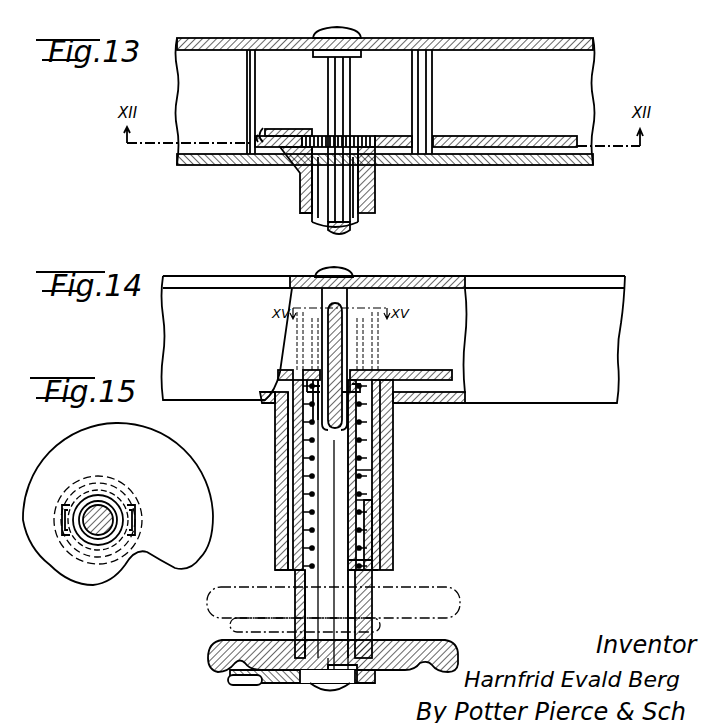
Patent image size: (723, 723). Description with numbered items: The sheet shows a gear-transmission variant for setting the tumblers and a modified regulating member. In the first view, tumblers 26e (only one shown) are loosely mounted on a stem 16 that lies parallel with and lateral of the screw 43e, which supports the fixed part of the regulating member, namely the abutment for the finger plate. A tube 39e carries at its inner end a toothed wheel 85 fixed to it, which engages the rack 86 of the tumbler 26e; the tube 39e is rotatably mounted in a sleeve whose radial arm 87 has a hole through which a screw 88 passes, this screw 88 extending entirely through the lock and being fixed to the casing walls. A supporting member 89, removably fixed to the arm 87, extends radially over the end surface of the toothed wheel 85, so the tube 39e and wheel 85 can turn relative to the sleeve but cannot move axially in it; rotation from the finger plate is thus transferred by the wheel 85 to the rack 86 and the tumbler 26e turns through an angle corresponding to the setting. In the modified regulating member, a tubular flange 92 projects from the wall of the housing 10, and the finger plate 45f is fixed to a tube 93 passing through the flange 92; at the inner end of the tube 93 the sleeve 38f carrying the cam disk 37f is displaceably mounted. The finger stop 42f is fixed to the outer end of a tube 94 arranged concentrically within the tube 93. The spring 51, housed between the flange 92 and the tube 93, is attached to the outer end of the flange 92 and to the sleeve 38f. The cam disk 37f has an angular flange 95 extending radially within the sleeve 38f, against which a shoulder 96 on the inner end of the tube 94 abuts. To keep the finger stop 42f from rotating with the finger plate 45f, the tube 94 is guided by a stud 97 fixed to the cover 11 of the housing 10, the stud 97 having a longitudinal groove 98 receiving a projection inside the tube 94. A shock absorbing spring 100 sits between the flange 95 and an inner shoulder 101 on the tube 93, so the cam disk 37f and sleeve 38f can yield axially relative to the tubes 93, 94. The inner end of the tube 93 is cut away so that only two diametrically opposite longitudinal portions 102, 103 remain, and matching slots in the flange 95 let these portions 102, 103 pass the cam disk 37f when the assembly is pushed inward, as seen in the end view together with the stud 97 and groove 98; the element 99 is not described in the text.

In FIG. 13, the housing 10 is at (537, 165).
In FIG. 14, the housing 10 is at (554, 400).
In FIG. 13, the cover 11 is at (556, 38).
In FIG. 14, the cover 11 is at (444, 277).
In FIG. 13, the stem 16 is at (432, 82).
In FIG. 13, the tumbler 26e is at (486, 136).
In FIG. 14, the cam disk 37f is at (422, 370).
In FIG. 15, the cam disk 37f is at (206, 553).
In FIG. 14, the sleeve 38f is at (393, 436).
In FIG. 13, the tube 39e is at (356, 191).
In FIG. 14, the finger stop 42f is at (376, 681).
In FIG. 13, the screw 43e is at (346, 78).
In FIG. 14, the finger plate 45f is at (440, 640).
In FIG. 14, the spring 51 is at (375, 500).
In FIG. 13, the toothed wheel 85 is at (366, 136).
In FIG. 13, the rack 86 is at (300, 180).
In FIG. 13, the radial arm 87 is at (258, 136).
In FIG. 13, the screw 88 is at (247, 70).
In FIG. 13, the supporting member 89 is at (292, 129).
In FIG. 14, the tubular flange 92 is at (393, 468).
In FIG. 14, the tube 93 is at (372, 582).
In FIG. 15, the tube 93 is at (92, 548).
In FIG. 14, the tube 94 is at (360, 604).
In FIG. 14, the angular flange 95 is at (366, 370).
In FIG. 15, the angular flange 95 is at (82, 508).
In FIG. 14, the shoulder 96 is at (314, 374).
In FIG. 15, the shoulder 96 is at (112, 540).
In FIG. 14, the stud 97 is at (350, 300).
In FIG. 15, the stud 97 is at (100, 536).
In FIG. 14, the longitudinal groove 98 is at (329, 312).
In FIG. 14, the outer casing 99 is at (276, 403).
In FIG. 14, the shock absorbing spring 100 is at (366, 514).
In FIG. 14, the inner shoulder 101 is at (372, 546).
In FIG. 14, the longitudinal portion 102 is at (300, 372).
In FIG. 15, the longitudinal portion 102 is at (64, 540).
In FIG. 14, the longitudinal portion 103 is at (378, 372).
In FIG. 15, the longitudinal portion 103 is at (133, 540).